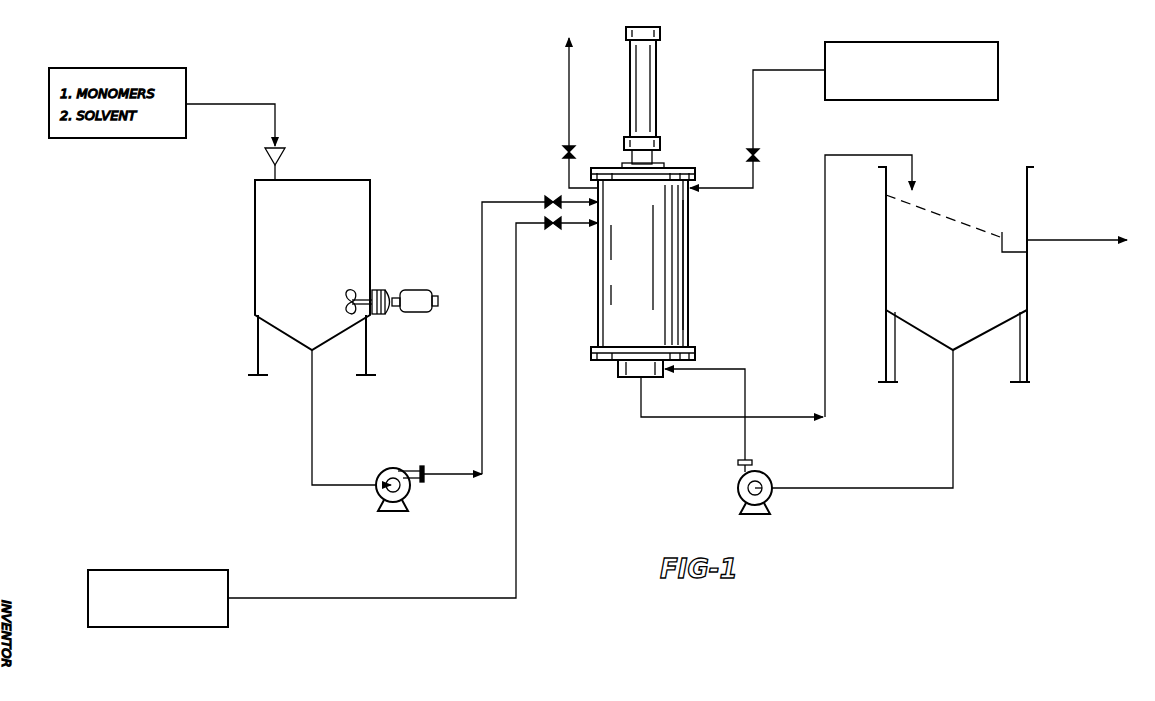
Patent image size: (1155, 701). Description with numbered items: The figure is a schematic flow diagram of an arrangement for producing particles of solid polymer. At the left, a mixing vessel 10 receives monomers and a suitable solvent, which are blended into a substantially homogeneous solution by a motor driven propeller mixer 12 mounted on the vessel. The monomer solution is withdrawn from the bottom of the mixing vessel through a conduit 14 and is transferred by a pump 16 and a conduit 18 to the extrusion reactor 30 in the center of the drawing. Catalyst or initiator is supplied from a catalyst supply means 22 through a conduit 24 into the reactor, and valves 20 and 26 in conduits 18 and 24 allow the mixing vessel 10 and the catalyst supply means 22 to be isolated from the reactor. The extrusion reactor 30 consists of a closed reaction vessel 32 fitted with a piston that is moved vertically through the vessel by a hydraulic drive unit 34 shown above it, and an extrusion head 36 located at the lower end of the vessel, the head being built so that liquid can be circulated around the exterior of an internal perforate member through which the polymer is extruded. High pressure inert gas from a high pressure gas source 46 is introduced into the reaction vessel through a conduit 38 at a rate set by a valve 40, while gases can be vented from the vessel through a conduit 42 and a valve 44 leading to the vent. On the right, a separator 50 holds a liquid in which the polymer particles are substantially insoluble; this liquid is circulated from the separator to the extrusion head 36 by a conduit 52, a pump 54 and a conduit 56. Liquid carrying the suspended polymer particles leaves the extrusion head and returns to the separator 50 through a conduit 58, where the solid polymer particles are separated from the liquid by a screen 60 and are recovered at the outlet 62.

The mixing vessel 10 is at (372, 205).
The motor driven propeller mixer 12 is at (416, 316).
The conduit 14 is at (313, 422).
The pump 16 is at (395, 470).
The conduit 18 is at (482, 385).
The valve 20 is at (551, 198).
The catalyst supply means 22 is at (180, 570).
The conduit 24 is at (517, 500).
The valve 26 is at (553, 230).
The extrusion reactor 30 is at (690, 240).
The closed reaction vessel 32 is at (689, 305).
The hydraulic drive unit 34 is at (656, 72).
The extrusion head 36 is at (622, 380).
The conduit 38 is at (754, 127).
The valve 40 is at (760, 155).
The conduit 42 is at (570, 97).
The valve 44 is at (563, 152).
The high pressure gas source 46 is at (910, 42).
The separator 50 is at (1028, 306).
The conduit 52 is at (955, 418).
The pump 54 is at (760, 478).
The conduit 56 is at (743, 438).
The conduit 58 is at (824, 347).
The screen 60 is at (945, 215).
The recovery point 62 is at (1055, 240).